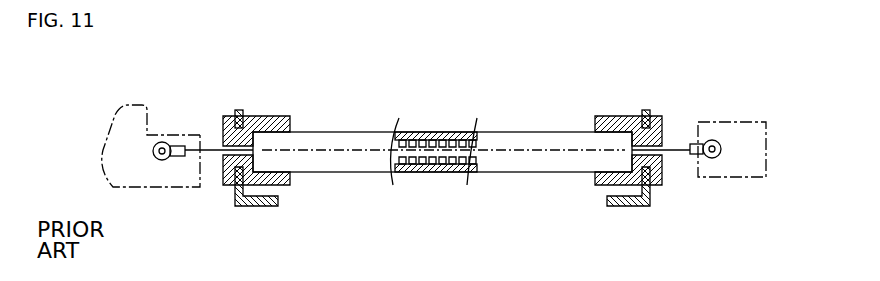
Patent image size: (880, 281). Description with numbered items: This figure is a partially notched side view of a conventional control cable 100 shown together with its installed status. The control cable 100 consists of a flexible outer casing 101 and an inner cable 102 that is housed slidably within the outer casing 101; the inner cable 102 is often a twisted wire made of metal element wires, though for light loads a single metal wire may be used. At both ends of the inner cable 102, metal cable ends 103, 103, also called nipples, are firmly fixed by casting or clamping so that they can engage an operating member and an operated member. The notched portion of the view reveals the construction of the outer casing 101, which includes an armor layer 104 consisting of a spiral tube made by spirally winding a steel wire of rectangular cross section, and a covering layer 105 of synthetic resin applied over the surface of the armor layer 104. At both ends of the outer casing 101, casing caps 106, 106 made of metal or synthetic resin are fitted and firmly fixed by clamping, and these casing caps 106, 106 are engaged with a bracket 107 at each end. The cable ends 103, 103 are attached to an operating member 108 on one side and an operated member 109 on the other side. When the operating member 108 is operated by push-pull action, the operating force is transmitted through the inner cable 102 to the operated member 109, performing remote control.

The control cable 100 is at (527, 112).
The outer casing 101 is at (360, 132).
The inner cable 102 is at (209, 147).
The cable end 103 is at (172, 158).
The armor layer 104 is at (435, 132).
The covering layer 105 is at (432, 172).
The casing cap 106 is at (277, 117).
The bracket 107 is at (255, 205).
The operating member 108 is at (133, 128).
The operated member 109 is at (743, 162).